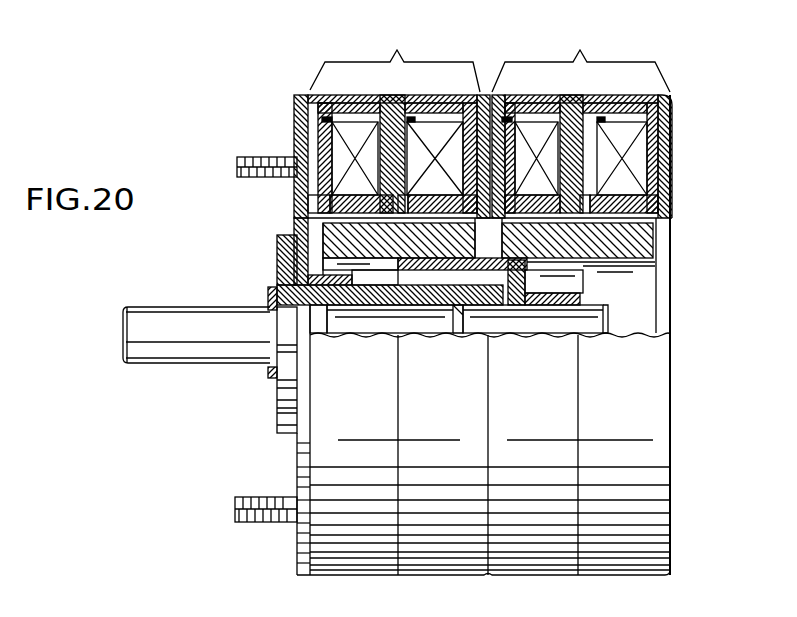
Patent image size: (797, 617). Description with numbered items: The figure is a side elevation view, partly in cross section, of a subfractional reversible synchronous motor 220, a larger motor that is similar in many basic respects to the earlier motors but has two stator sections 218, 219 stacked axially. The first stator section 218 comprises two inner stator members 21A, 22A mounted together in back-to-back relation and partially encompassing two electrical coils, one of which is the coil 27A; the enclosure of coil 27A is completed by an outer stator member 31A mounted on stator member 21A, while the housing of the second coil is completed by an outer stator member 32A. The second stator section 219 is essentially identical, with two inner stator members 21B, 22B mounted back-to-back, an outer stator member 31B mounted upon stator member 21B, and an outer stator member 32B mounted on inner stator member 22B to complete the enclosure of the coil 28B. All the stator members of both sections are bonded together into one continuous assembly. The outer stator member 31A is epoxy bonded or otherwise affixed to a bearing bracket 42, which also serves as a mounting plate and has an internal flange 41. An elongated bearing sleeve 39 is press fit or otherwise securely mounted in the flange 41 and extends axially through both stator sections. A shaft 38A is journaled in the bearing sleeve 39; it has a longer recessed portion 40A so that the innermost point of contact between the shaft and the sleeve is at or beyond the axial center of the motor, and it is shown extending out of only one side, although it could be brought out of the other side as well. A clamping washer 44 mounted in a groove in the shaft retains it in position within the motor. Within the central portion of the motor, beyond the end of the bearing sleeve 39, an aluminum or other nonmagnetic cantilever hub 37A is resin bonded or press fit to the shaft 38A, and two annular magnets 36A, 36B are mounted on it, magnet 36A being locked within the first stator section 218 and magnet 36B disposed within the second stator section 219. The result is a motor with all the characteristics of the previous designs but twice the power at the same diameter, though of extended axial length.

The first stator section 218 is at (360, 116).
The second stator section 219 is at (632, 116).
The subfractional reversible synchronous motor 220 is at (680, 86).
The outer stator member 31A is at (318, 93).
The outer stator member 31B is at (492, 100).
The outer stator member 32A is at (477, 97).
The outer stator member 32B is at (662, 122).
The inner stator member 21A is at (395, 97).
The inner stator member 22A is at (402, 100).
The inner stator member 21B is at (577, 100).
The inner stator member 22B is at (580, 100).
The electrical coil 27A is at (297, 133).
The coil 28B is at (637, 162).
The bearing bracket 42 is at (298, 215).
The annular magnet 36A is at (343, 238).
The annular magnet 36B is at (637, 240).
The internal flange 41 is at (295, 286).
The cantilever hub 37A is at (567, 285).
The bearing sleeve 39 is at (290, 303).
The shaft 38A is at (178, 345).
The clamping washer 44 is at (270, 378).
The recessed portion 40A is at (377, 323).